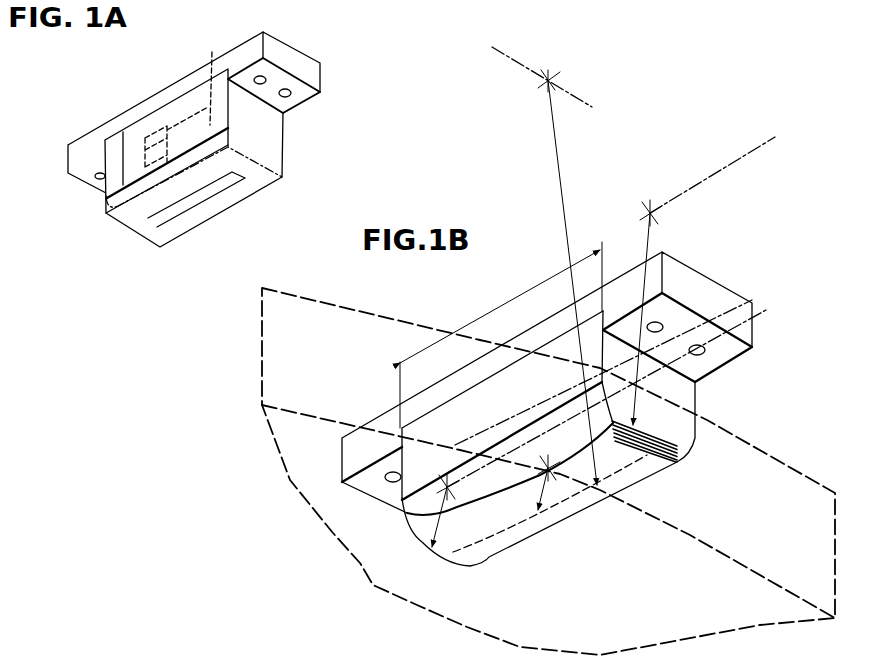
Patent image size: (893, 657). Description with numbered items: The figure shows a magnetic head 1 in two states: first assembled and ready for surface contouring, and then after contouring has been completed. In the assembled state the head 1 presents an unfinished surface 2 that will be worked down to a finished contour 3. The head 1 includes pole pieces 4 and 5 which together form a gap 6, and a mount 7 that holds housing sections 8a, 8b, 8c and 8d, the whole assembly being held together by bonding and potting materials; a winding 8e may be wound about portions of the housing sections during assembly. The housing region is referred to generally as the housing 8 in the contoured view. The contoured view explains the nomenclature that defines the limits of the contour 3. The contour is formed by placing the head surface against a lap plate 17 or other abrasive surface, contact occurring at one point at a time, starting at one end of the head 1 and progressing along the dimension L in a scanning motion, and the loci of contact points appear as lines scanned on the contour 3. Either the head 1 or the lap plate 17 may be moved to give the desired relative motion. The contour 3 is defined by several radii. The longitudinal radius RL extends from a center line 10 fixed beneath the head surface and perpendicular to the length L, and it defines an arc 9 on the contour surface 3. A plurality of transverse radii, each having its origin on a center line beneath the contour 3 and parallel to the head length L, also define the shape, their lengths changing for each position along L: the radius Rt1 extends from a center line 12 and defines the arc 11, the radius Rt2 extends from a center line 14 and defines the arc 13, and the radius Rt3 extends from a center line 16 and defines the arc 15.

In FIG. 1A, the head 1 is at (300, 161).
In FIG. 1A, the unfinished surface 2 is at (160, 242).
In FIG. 1A, the finished contour 3 is at (135, 231).
In FIG. 1B, the finished contour 3 is at (487, 557).
In FIG. 1A, the pole piece 4 is at (150, 145).
In FIG. 1A, the pole piece 5 is at (211, 40).
In FIG. 1A, the gap 6 is at (214, 184).
In FIG. 1A, the mount 7 is at (93, 148).
In FIG. 1B, the mount 7 is at (393, 417).
In FIG. 1B, the mounting block 8 is at (689, 395).
In FIG. 1A, the housing section 8a is at (100, 179).
In FIG. 1A, the housing section 8b is at (273, 132).
In FIG. 1A, the housing section 8c is at (106, 209).
In FIG. 1A, the housing section 8d is at (244, 194).
In FIG. 1A, the winding 8e is at (183, 123).
In FIG. 1B, the arc 9 is at (518, 546).
In FIG. 1B, the center line 10 is at (552, 77).
In FIG. 1B, the arc 11 is at (678, 447).
In FIG. 1B, the center line 12 is at (717, 175).
In FIG. 1B, the arc 13 is at (566, 526).
In FIG. 1B, the center line 14 is at (758, 344).
In FIG. 1B, the arc 15 is at (450, 558).
In FIG. 1B, the center line 16 is at (765, 295).
In FIG. 1B, the lap plate 17 is at (772, 452).